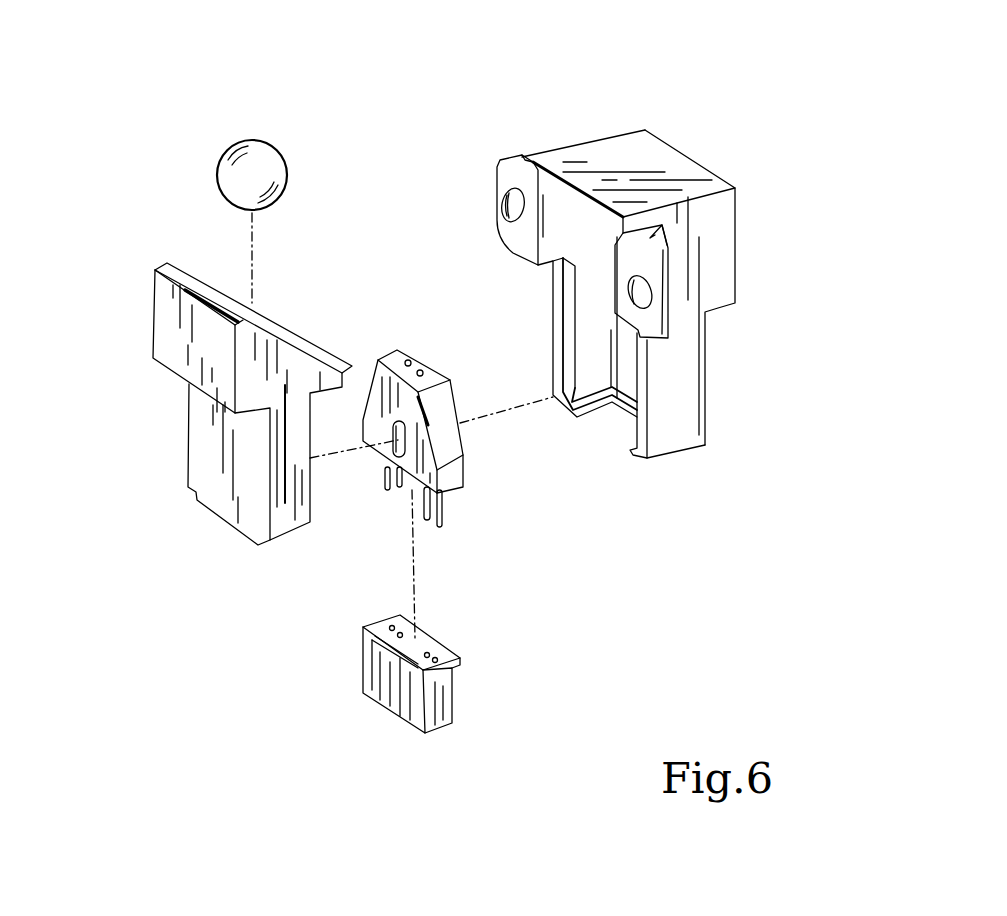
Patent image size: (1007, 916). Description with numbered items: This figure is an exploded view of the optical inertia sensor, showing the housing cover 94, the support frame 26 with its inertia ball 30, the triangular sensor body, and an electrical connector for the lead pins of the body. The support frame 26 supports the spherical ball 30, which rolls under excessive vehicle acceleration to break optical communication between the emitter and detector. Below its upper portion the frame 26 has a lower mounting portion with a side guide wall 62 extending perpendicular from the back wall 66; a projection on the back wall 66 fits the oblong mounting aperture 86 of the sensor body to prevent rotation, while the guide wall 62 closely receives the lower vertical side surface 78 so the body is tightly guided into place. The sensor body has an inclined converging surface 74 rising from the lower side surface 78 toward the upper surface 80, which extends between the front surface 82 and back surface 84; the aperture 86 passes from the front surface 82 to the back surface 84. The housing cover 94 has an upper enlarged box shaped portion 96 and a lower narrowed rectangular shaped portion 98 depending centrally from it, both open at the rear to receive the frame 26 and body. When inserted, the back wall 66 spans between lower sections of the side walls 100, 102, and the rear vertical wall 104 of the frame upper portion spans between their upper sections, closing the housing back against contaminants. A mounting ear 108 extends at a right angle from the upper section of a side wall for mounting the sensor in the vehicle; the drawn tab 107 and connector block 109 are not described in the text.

The support frame 26 is at (199, 415).
The spherical ball 30 is at (262, 170).
The side guide wall 62 is at (302, 502).
The back wall 66 is at (250, 442).
The inclined converging surface 74 is at (447, 433).
The lower vertical side surface 78 is at (450, 480).
The upper surface 80 is at (437, 410).
The front surface 82 is at (455, 400).
The back surface 84 is at (383, 407).
The mounting aperture 86 is at (397, 440).
The housing cover 94 is at (643, 243).
The upper enlarged box shaped portion 96 is at (777, 219).
The lower narrowed rectangular shaped portion 98 is at (738, 372).
The side wall 100 is at (675, 397).
The side wall 102 is at (593, 297).
The rear vertical wall 104 is at (175, 343).
The mounting tab hole 107 is at (665, 293).
The mounting ear 108 is at (508, 178).
The connector block 109 is at (445, 702).